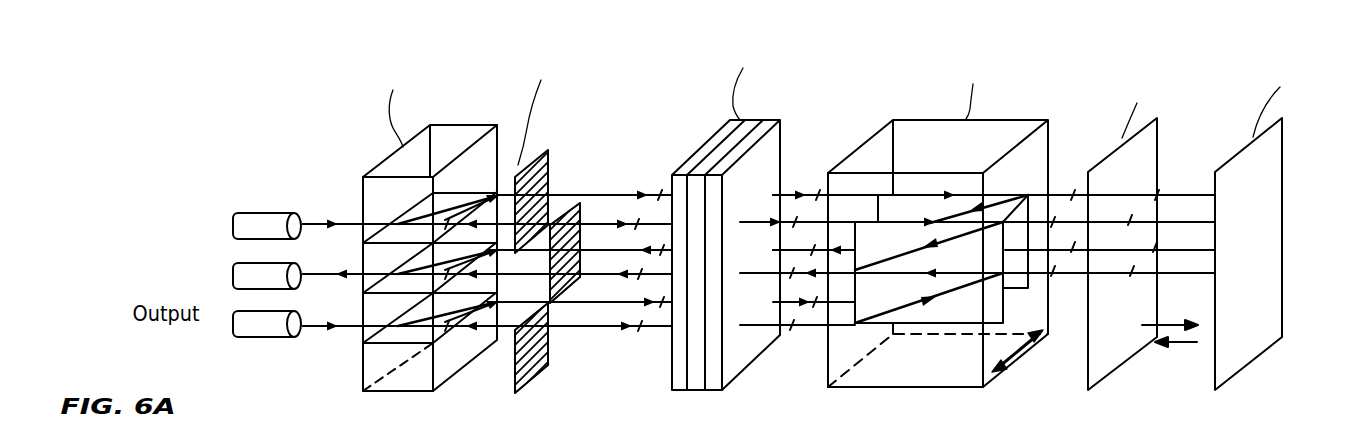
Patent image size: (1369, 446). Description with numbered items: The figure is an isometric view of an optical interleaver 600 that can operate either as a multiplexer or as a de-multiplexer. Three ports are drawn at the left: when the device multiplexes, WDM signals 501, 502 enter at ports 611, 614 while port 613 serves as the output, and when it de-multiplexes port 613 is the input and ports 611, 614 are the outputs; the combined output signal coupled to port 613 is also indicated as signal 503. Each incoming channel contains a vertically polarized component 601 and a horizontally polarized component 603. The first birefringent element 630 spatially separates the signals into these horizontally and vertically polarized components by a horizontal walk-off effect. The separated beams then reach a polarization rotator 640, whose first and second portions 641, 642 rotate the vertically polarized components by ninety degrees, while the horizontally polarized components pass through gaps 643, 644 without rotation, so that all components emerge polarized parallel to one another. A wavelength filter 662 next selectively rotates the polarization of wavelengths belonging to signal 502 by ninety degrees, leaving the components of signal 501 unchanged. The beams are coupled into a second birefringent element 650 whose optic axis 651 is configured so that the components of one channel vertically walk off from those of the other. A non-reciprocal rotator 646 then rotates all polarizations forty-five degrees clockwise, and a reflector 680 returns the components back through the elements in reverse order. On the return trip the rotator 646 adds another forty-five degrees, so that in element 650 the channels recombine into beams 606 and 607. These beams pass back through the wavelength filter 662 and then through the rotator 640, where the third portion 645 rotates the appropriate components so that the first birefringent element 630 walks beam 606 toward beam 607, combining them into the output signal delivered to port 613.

The optical interleaver 600 is at (266, 80).
The port 611 is at (231, 234).
The port 613 is at (231, 288).
The port 614 is at (232, 334).
The WDM signal 501 is at (328, 222).
The WDM signal 503 is at (338, 272).
The WDM signal 502 is at (335, 323).
The first birefringent element 630 is at (386, 164).
The polarization rotator 640 is at (507, 386).
The first portion of polarization rotator 641 is at (547, 152).
The second portion of polarization rotator 642 is at (539, 380).
The gap 643 is at (558, 180).
The gap 644 is at (553, 333).
The third portion of polarization rotator 645 is at (560, 210).
The wavelength filter 662 is at (755, 380).
The beam 606 is at (810, 189).
The beam 607 is at (816, 247).
The second birefringent element 650 is at (892, 389).
The optic axis 651 is at (1017, 350).
The non-reciprocal rotator 646 is at (1157, 152).
The reflector 680 is at (1285, 140).
The vertically polarized component 601 is at (626, 320).
The horizontally polarized component 603 is at (1069, 320).